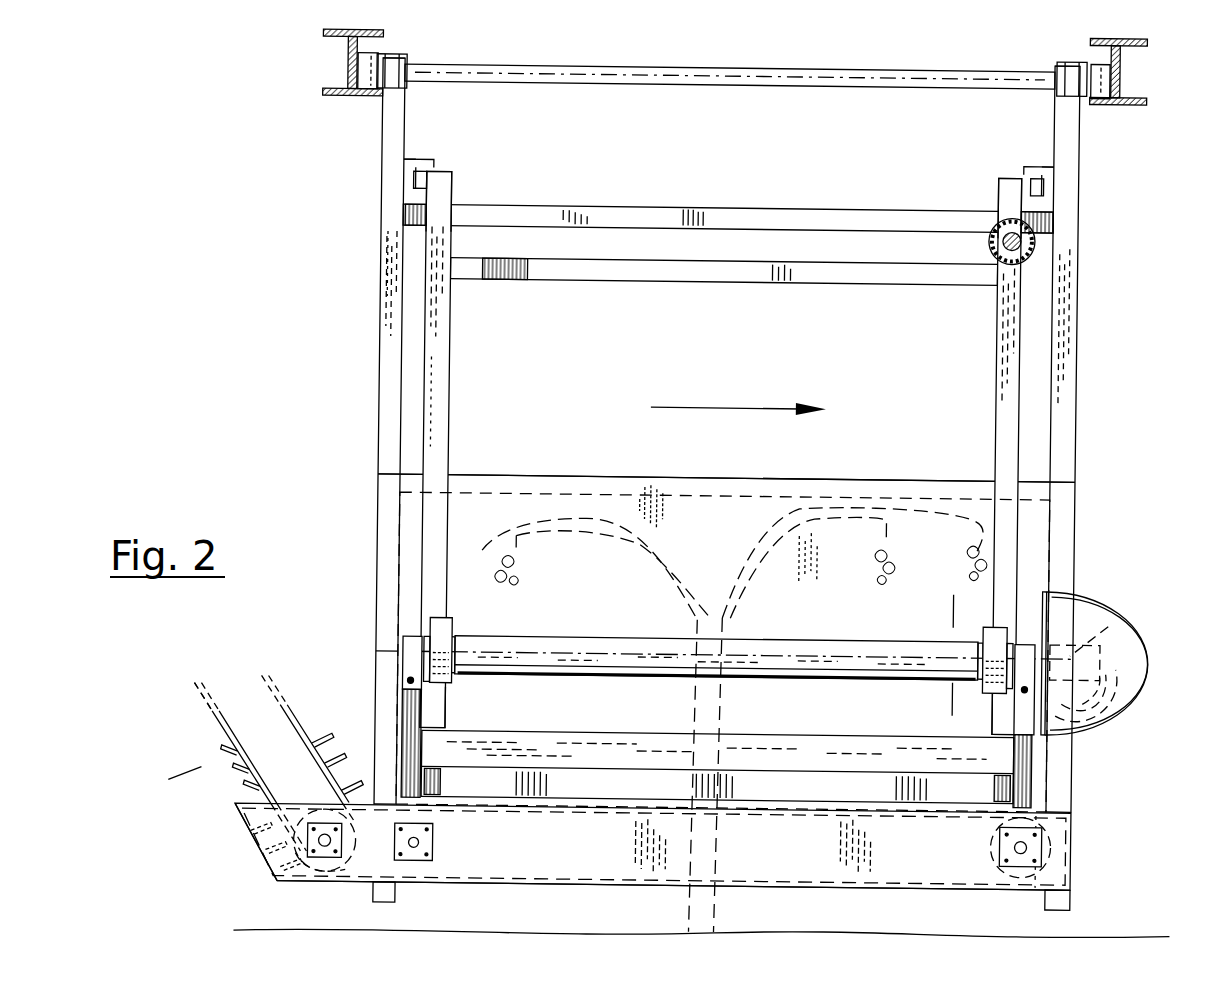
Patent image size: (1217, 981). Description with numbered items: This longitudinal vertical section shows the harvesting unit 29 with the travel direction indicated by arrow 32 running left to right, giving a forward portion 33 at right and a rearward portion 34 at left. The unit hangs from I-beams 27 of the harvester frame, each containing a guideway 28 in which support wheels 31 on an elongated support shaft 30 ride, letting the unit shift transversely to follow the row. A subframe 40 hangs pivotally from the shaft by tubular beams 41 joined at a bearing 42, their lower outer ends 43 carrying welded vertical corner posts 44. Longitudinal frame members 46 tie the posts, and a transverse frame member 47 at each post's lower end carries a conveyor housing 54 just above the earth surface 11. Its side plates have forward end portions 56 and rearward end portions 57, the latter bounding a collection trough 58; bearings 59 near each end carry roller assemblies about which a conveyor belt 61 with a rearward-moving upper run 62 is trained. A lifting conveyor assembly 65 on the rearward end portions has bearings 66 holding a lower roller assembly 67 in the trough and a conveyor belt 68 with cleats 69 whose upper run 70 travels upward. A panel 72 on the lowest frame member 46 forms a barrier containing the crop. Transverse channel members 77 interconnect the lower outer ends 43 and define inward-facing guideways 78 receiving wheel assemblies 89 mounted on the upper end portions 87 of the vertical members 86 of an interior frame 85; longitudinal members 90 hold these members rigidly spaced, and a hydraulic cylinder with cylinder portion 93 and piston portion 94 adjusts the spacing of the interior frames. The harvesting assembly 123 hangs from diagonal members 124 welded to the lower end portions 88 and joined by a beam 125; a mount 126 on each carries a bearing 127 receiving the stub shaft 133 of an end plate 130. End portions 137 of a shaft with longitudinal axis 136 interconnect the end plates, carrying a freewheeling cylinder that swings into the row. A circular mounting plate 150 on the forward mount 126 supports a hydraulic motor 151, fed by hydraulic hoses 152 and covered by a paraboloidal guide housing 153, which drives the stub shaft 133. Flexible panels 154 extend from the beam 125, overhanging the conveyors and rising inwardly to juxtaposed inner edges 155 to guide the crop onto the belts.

The earth surface 11 is at (868, 934).
The I-beam 27 is at (343, 98).
The track or guideway 28 is at (357, 53).
The harvesting unit 29 is at (345, 438).
The support shaft 30 is at (768, 72).
The support wheel 31 is at (370, 90).
The arrow 32 is at (727, 407).
The forward portion 33 is at (1075, 390).
The rearward portion 34 is at (383, 378).
The subframe 40 is at (372, 234).
The tubular beam 41 is at (403, 124).
The bearing 42 is at (393, 60).
The lower outer end 43 is at (393, 166).
The corner post 44 is at (383, 353).
The longitudinal frame member 46 is at (607, 213).
The transverse frame member 47 is at (392, 897).
The housing 54 is at (660, 882).
The forward end portion 56 is at (1068, 865).
The rearward end portion 57 is at (292, 882).
The collection trough 58 is at (263, 848).
The bearing 59 is at (433, 850).
The conveyor belt 61 is at (590, 878).
The upper run 62 is at (595, 800).
The lifting conveyor assembly 65 is at (205, 773).
The bearing 66 is at (340, 860).
The lower roller assembly 67 is at (318, 812).
The conveyor belt 68 is at (228, 745).
The cleat 69 is at (340, 795).
The upper run 70 is at (312, 740).
The panel 72 is at (723, 533).
The transverse supporting channel member 77 is at (417, 162).
The track or guideway 78 is at (408, 192).
The interior frame 85 is at (460, 320).
The vertical member 86 is at (443, 358).
The upper end portion 87 is at (447, 185).
The lower end portion 88 is at (435, 718).
The wheel assembly 89 is at (420, 178).
The longitudinal member 90 is at (878, 286).
The cylinder portion 93 is at (1034, 248).
The piston portion 94 is at (1020, 240).
The harvesting assembly 123 is at (545, 610).
The diagonal member 124 is at (455, 744).
The beam 125 is at (850, 805).
The mount 126 is at (405, 710).
The bearing 127 is at (412, 637).
The end plate 130 is at (438, 620).
The stub shaft 133 is at (426, 625).
The longitudinal axis 136 is at (614, 650).
The end portion 137 is at (455, 640).
The circular mounting plate 150 is at (1050, 612).
The hydraulic motor 151 is at (1112, 620).
The hydraulic hose 152 is at (1100, 718).
The guide housing 153 is at (1140, 643).
The flexible panel 154 is at (823, 760).
The inner edge 155 is at (567, 736).